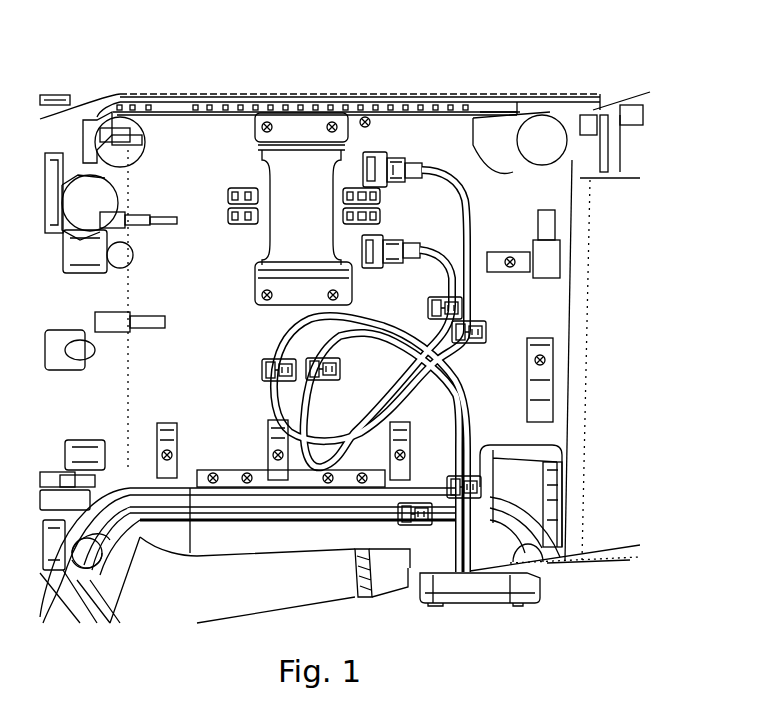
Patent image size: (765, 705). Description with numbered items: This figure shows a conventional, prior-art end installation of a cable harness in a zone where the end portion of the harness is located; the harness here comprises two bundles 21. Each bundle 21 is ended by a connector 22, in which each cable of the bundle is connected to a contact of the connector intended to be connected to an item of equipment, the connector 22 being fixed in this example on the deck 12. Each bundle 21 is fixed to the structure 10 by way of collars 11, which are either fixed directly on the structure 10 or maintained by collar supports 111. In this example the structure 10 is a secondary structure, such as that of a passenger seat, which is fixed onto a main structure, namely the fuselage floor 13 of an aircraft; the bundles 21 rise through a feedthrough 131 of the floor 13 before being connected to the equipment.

The structure 10 is at (183, 88).
The collar 11 is at (490, 334).
The collar support 111 is at (517, 447).
The deck 12 is at (318, 203).
The fuselage floor 13 is at (323, 588).
The feedthrough 131 is at (482, 563).
The bundle 21 is at (462, 203).
The connector 22 is at (386, 162).